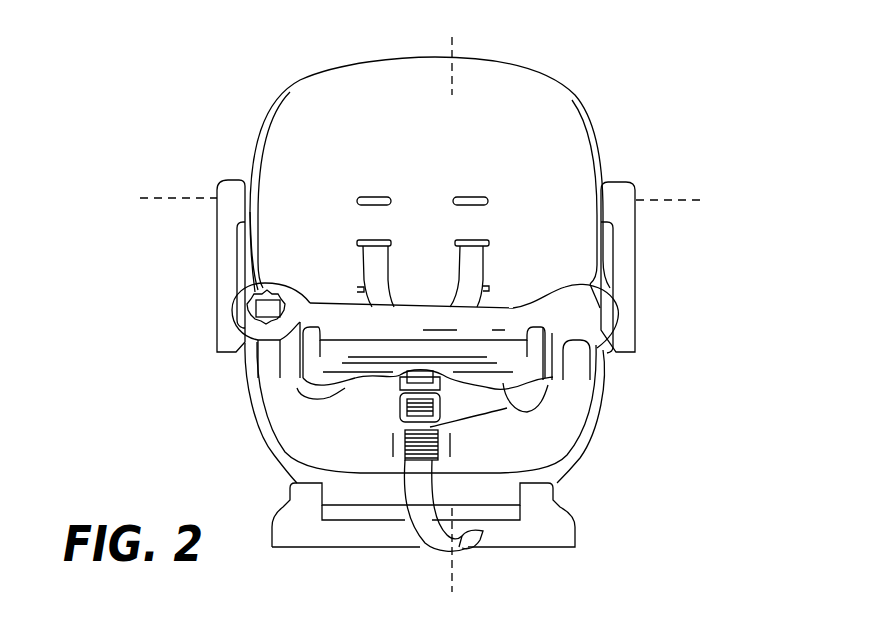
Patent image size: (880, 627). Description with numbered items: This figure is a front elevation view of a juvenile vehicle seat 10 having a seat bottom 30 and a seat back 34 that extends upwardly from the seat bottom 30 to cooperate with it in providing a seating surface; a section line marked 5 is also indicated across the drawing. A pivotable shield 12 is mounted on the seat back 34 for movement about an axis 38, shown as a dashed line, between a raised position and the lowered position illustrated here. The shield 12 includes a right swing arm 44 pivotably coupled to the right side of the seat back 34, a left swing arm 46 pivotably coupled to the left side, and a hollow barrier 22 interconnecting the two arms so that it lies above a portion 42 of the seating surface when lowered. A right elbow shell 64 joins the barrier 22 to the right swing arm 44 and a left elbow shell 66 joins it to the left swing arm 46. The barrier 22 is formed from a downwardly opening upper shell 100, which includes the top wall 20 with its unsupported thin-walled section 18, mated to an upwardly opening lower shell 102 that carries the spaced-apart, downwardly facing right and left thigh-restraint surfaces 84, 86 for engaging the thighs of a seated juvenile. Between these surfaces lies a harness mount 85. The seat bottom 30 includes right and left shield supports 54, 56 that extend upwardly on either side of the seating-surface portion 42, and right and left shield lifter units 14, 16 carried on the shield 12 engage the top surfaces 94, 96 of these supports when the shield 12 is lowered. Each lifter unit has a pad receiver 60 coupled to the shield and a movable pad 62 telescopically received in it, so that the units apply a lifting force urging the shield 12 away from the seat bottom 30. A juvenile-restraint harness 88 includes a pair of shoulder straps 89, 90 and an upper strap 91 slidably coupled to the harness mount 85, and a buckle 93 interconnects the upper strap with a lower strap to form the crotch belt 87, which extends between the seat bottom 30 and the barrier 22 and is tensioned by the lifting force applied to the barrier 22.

The section line 5- 5 is at (412, 46).
The juvenile vehicle seat 10 is at (601, 69).
The pivotable shield 12 is at (205, 281).
The right shield lifter unit 14 is at (247, 310).
The left shield lifter unit 16 is at (613, 329).
The unsupported thin-walled section 18 is at (420, 307).
The top wall 20 is at (347, 307).
The hollow barrier 22 is at (503, 322).
The seat bottom 30 is at (249, 444).
The seat back 34 is at (280, 100).
The axis 38 is at (172, 198).
The portion of the seating surface 42 is at (445, 427).
The right swing arm 44 is at (230, 258).
The left swing arm 46 is at (627, 255).
The right shield support 54 is at (243, 362).
The left shield support 56 is at (606, 363).
The pad receiver 60 is at (268, 300).
The movable pad 62 is at (393, 333).
The right elbow shell 64 is at (258, 287).
The left elbow shell 66 is at (592, 302).
The right thigh-restraint surface 84 is at (307, 392).
The harness mount 85 is at (448, 388).
The left thigh-restraint surface 86 is at (553, 385).
The crotch belt 87 is at (375, 405).
The juvenile-restraint harness 88 is at (492, 228).
The shoulder strap 89 is at (368, 264).
The shoulder strap 90 is at (458, 265).
The upper strap 91 is at (427, 378).
The buckle 93 is at (403, 410).
The top surface 94 is at (248, 337).
The top surface 96 is at (574, 321).
The upper shell 100 is at (512, 307).
The lower shell 102 is at (553, 387).